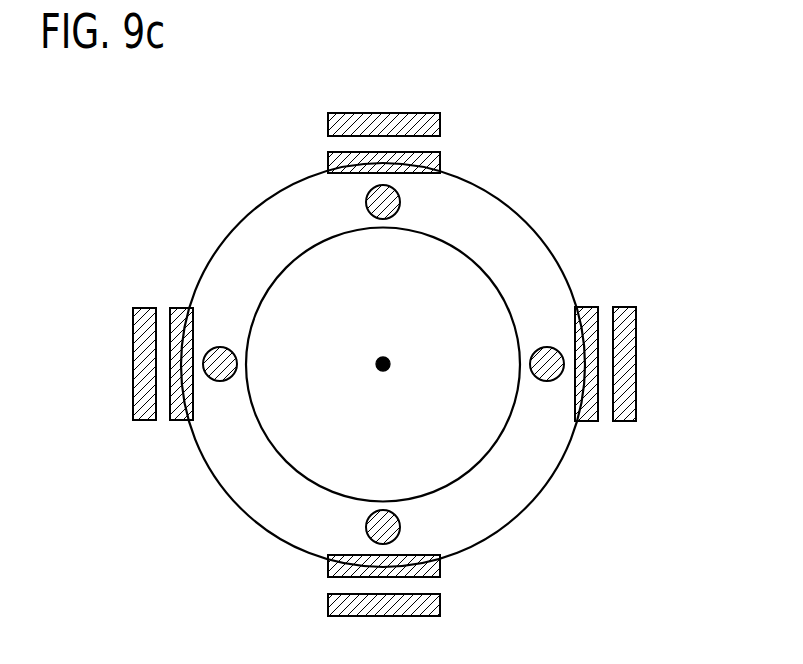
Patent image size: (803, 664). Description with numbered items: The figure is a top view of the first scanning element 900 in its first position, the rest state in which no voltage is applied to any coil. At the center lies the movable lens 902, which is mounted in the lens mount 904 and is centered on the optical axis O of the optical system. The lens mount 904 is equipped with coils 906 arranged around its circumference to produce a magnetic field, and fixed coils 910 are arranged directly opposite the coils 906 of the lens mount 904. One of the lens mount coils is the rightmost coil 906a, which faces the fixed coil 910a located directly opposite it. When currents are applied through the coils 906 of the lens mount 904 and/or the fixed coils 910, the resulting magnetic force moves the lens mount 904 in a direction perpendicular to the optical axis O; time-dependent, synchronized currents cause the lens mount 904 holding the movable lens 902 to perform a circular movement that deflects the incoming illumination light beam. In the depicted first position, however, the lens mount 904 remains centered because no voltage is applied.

The first scanning element 900 is at (187, 159).
The movable lens 902 is at (473, 261).
The lens mount 904 is at (532, 505).
The coils 906 is at (440, 162).
The rightmost coil 906a is at (588, 421).
The fixed coils 910 is at (440, 124).
The fixed coil 910a is at (637, 362).
The optical axis O is at (391, 364).